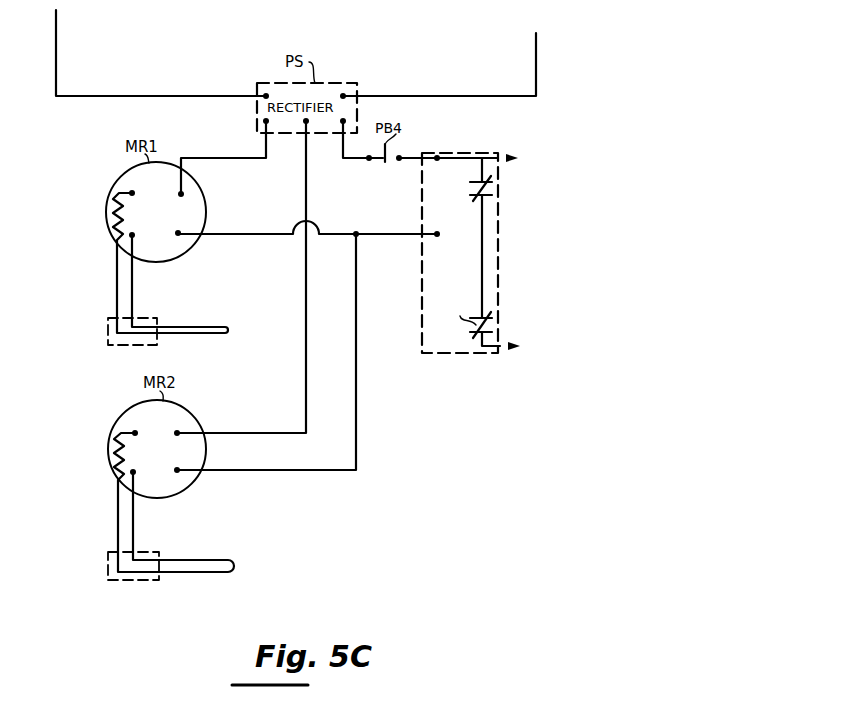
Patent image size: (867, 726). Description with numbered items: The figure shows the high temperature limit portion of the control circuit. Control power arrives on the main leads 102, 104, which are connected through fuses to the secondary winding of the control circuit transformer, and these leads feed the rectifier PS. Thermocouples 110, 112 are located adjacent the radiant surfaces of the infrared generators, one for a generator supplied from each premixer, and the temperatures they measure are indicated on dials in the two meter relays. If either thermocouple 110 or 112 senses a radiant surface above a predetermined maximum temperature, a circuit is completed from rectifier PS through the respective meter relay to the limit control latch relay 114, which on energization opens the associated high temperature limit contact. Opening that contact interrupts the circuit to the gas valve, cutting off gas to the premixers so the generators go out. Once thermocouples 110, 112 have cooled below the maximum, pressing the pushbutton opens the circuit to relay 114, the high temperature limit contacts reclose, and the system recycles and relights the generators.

The main lead 102 is at (55, 44).
The main lead 104 is at (537, 62).
The thermocouple 110 is at (232, 331).
The thermocouple 112 is at (233, 569).
The limit control latch relay 114 is at (421, 291).